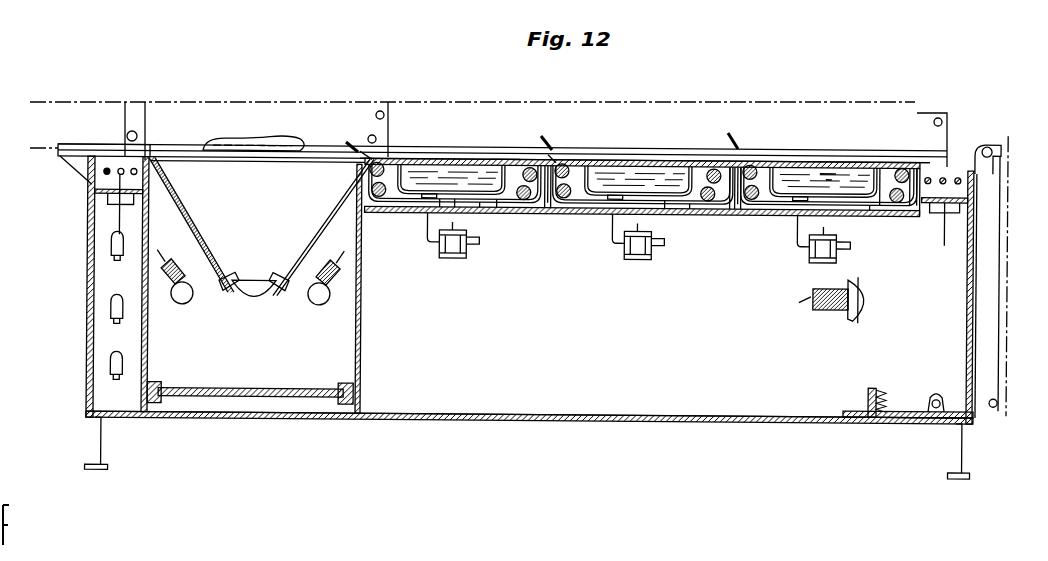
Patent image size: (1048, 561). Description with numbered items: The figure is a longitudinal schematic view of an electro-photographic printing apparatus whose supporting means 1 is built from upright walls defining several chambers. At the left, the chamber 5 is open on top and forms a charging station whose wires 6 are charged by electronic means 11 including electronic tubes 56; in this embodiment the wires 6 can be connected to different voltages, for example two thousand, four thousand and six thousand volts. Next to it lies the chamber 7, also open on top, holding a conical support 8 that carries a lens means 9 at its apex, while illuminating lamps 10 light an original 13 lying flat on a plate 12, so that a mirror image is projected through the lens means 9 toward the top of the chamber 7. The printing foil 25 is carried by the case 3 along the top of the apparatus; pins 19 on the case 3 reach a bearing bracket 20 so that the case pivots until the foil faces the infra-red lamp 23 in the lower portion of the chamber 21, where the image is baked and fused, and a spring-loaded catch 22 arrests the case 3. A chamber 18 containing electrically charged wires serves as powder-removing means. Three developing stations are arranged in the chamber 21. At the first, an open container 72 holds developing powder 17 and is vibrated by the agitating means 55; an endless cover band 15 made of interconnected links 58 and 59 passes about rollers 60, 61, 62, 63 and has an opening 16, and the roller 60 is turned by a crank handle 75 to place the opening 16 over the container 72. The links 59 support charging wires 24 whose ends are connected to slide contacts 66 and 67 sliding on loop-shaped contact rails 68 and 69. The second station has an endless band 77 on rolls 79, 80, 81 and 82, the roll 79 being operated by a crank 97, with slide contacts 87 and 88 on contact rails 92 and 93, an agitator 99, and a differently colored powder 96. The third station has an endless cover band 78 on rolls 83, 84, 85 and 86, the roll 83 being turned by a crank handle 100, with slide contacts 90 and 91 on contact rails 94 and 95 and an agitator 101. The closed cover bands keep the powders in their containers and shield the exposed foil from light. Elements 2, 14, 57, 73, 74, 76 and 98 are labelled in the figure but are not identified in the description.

The supporting means 1 is at (88, 351).
The cover plate 2 is at (75, 161).
The case 3 is at (210, 130).
The chamber 5 is at (110, 198).
The wires 6 is at (105, 177).
The chamber 7 is at (190, 170).
The conical support 8 is at (176, 202).
The lens means 9 is at (252, 297).
The illuminating lamps 10 is at (184, 304).
The electronic means 11 is at (95, 261).
The plate 12 is at (276, 398).
The original 13 is at (239, 398).
The chute plate 14 is at (340, 198).
The cover band 15 is at (403, 211).
The opening 16 is at (468, 210).
The developing powder 17 is at (488, 210).
The chamber 18 is at (944, 166).
The pins 19 is at (134, 131).
The bearing bracket 20 is at (988, 139).
The chamber 21 is at (804, 408).
The spring-loaded catch 22 is at (976, 416).
The infra-red lamp 23 is at (857, 300).
The charging wires 24 is at (496, 160).
The printing foil 25 is at (246, 158).
The agitating means 55 is at (457, 256).
The electronic tubes 56 is at (110, 302).
The hole 57 is at (380, 111).
The links 58 is at (432, 170).
The links 59 is at (443, 166).
The roller 60 is at (370, 135).
The roller 61 is at (548, 166).
The roller 62 is at (537, 197).
The roller 63 is at (374, 192).
The slide contact 66 is at (453, 166).
The slide contact 67 is at (479, 168).
The contact rail 68 is at (485, 208).
The contact rail 69 is at (502, 170).
The open container 72 is at (499, 208).
The tube 73 is at (667, 210).
The rollers 74 is at (882, 166).
The crank handle 75 is at (355, 150).
The bracket 76 is at (376, 160).
The endless band 77 is at (610, 166).
The endless cover band 78 is at (778, 210).
The roll 79 is at (559, 160).
The roll 80 is at (726, 210).
The roll 81 is at (705, 210).
The roll 82 is at (562, 197).
The roll 83 is at (756, 166).
The roll 84 is at (906, 170).
The roll 85 is at (888, 208).
The roll 86 is at (748, 200).
The slide contact 87 is at (640, 170).
The slide contact 88 is at (662, 166).
The slide contact 90 is at (827, 168).
The slide contact 91 is at (850, 166).
The contact rail 92 is at (690, 166).
The contact rail 93 is at (710, 160).
The contact rail 94 is at (872, 165).
The contact rail 95 is at (905, 165).
The powder 96 is at (678, 208).
The crank 97 is at (790, 170).
The stop 98 is at (542, 132).
The agitator 99 is at (642, 256).
The crank handle 100 is at (735, 129).
The agitator 101 is at (810, 257).